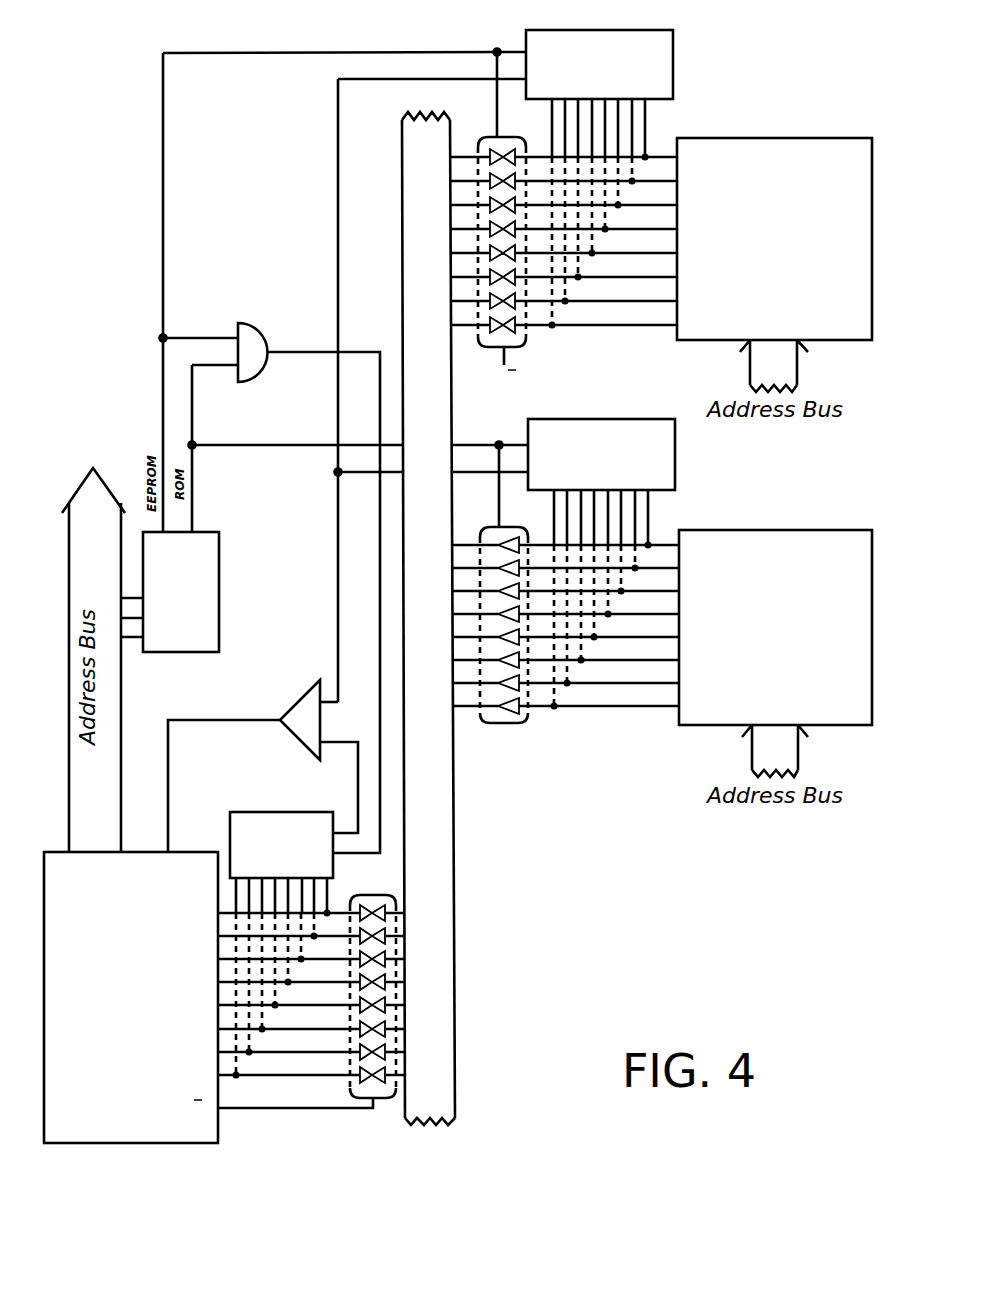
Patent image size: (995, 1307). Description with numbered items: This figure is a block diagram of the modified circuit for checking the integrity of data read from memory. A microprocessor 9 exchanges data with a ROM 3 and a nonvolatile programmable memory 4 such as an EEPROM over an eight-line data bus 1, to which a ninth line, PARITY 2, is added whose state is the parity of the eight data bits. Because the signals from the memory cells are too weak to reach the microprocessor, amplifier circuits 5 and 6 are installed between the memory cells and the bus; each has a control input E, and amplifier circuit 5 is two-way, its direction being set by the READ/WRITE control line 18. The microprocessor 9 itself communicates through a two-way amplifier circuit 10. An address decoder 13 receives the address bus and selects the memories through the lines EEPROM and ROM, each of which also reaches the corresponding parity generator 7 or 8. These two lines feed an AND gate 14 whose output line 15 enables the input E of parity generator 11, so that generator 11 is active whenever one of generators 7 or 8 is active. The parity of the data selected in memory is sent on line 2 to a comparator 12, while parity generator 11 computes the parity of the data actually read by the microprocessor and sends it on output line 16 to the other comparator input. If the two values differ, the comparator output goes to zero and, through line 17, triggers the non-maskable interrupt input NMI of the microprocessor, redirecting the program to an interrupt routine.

The data bus 1 is at (455, 843).
The PARITY line 2 is at (338, 567).
The ROM 3 is at (774, 239).
The nonvolatile programmable memory 4 is at (775, 627).
The amplifier circuit 5 is at (527, 335).
The amplifier circuit 6 is at (528, 715).
The parity generator 7 is at (599, 64).
The parity generator 8 is at (601, 454).
The microprocessor 9 is at (131, 997).
The amplifier circuit 10 is at (382, 1098).
The parity generator 11 is at (281, 845).
The comparator 12 is at (290, 735).
The address decoder 13 is at (190, 652).
The AND gate 14 is at (250, 322).
The line 15 is at (300, 350).
The output line 16 is at (358, 778).
The line 17 is at (168, 775).
The READ/WRITE control line 18 is at (257, 1108).